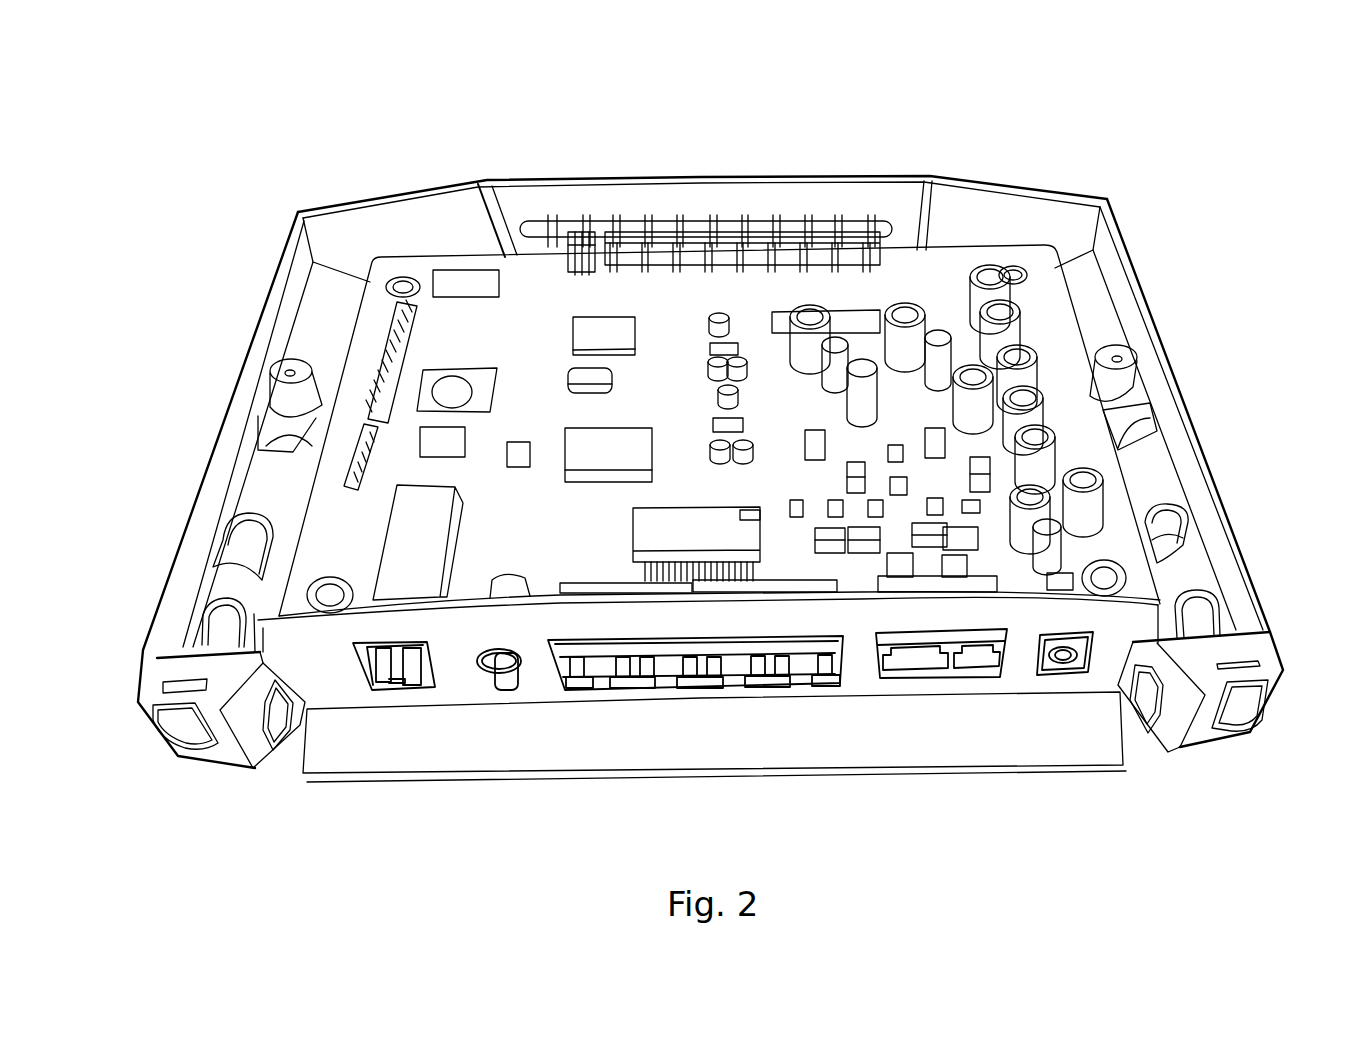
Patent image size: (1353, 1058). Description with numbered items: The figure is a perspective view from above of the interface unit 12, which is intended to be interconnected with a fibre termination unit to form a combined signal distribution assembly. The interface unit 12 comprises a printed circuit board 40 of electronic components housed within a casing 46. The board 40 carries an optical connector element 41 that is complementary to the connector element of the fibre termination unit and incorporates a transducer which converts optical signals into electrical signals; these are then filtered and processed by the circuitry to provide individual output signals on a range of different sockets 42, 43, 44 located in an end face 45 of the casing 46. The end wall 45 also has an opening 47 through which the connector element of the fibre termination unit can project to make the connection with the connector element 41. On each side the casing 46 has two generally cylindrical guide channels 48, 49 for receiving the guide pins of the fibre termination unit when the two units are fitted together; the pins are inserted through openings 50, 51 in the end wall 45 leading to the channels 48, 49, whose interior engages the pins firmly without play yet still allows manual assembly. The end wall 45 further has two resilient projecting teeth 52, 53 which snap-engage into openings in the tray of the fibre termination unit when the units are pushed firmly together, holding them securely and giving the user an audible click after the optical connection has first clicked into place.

The interface unit 12 is at (203, 413).
The printed circuit board 40 is at (537, 280).
The optical connector element 41 is at (405, 575).
The socket 42 is at (917, 673).
The socket 43 is at (1060, 673).
The socket 44 is at (802, 673).
The end face 45 is at (463, 687).
The casing 46 is at (836, 165).
The opening 47 is at (385, 683).
The guide channel 48 is at (240, 547).
The guide channel 49 is at (1177, 543).
The opening 50 is at (160, 732).
The opening 51 is at (1253, 697).
The resilient projecting tooth 52 is at (283, 747).
The resilient projecting tooth 53 is at (1153, 733).